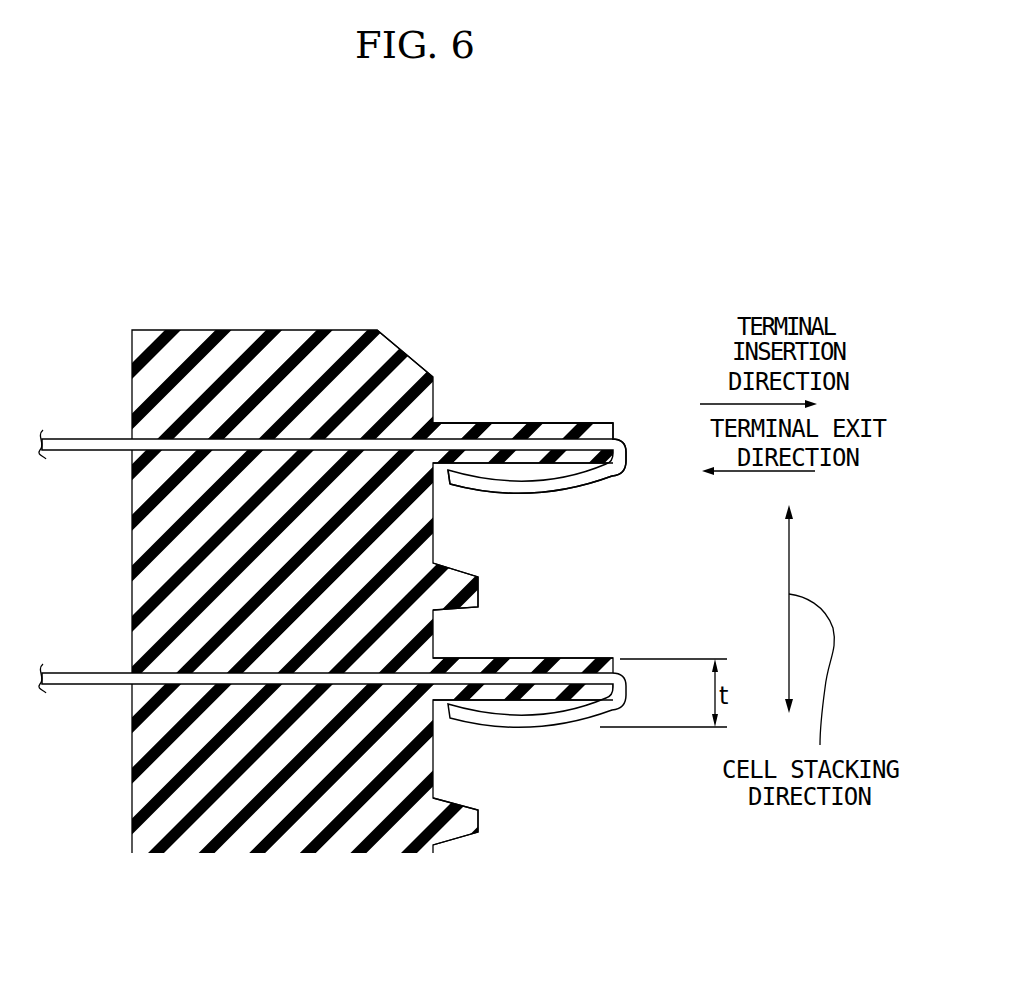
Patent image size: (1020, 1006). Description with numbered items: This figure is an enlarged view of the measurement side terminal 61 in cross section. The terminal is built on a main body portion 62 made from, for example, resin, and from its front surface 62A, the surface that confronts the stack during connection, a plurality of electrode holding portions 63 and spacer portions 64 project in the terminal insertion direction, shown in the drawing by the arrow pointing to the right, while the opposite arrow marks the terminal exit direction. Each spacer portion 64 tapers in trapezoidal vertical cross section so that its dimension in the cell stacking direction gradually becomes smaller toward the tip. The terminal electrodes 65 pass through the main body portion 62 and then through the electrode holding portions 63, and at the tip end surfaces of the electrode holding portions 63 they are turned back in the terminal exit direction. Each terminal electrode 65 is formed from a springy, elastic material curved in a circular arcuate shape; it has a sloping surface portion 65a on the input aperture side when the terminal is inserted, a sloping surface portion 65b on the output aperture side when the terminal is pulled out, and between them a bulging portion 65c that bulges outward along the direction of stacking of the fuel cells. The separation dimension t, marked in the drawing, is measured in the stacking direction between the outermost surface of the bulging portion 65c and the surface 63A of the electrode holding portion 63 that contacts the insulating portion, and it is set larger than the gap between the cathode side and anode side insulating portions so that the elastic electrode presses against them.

The measurement side terminal 61 is at (355, 308).
The main body portion 62 is at (223, 330).
The front surface 62A is at (437, 387).
The electrode holding portion 63 is at (596, 412).
The surface which contacts the insulating portion 63A is at (530, 423).
The spacer portion 64 is at (480, 587).
The terminal electrode 65 is at (680, 526).
The sloping surface portion 65a is at (600, 482).
The sloping surface portion 65b is at (488, 487).
The bulging portion 65c is at (533, 489).